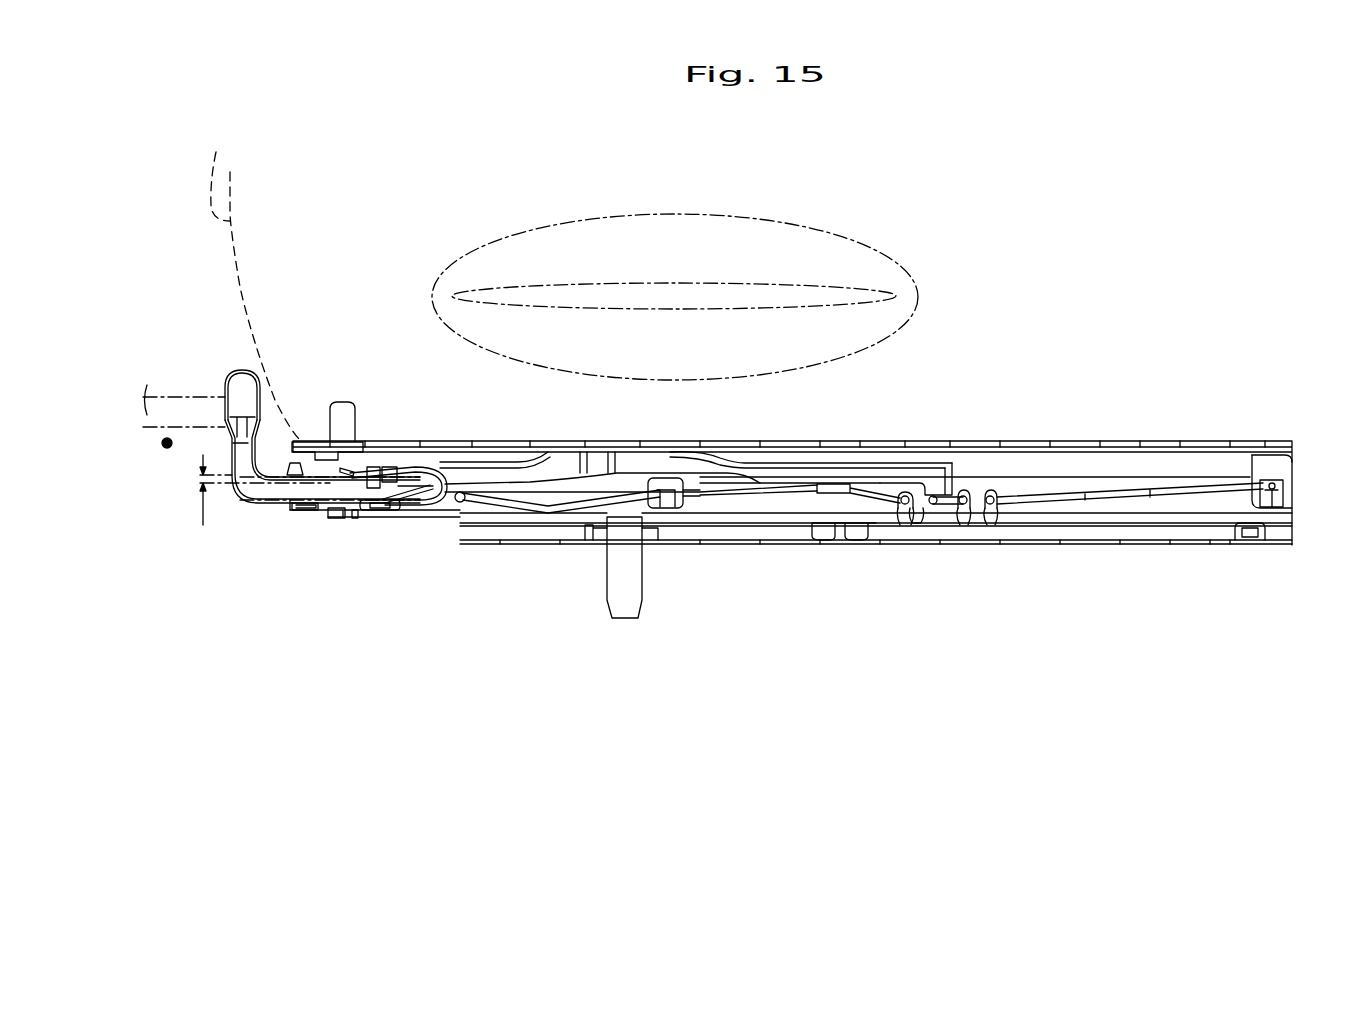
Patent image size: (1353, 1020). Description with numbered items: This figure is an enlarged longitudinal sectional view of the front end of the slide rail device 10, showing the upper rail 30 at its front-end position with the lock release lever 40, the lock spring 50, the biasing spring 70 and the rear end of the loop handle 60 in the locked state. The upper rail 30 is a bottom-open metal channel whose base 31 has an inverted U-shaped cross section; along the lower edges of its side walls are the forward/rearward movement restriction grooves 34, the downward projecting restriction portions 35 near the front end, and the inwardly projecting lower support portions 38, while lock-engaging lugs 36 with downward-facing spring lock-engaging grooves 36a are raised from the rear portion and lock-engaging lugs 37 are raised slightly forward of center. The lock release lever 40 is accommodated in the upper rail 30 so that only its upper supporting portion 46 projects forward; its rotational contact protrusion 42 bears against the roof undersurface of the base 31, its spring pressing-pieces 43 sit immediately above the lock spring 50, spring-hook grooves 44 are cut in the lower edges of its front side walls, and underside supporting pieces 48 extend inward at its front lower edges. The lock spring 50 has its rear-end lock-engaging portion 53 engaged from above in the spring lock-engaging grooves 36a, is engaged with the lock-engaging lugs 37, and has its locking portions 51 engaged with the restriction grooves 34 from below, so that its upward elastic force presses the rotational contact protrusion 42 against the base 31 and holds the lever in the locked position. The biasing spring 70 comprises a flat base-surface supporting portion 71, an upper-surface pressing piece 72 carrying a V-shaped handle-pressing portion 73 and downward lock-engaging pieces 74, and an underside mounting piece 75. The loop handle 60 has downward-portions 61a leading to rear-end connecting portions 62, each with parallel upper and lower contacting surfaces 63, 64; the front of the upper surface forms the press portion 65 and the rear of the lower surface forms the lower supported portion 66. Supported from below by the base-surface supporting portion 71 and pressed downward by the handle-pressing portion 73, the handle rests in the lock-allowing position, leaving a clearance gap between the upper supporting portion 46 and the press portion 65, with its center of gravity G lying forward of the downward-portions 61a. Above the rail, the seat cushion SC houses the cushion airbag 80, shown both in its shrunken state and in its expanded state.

The slide rail device 10 is at (1003, 282).
The upper rail 30 is at (945, 460).
The base 31 is at (850, 445).
The forward/rearward movement restriction grooves 34 is at (990, 506).
The downward projecting restriction portions 35 is at (920, 523).
The lock-engaging lugs 36 is at (1272, 509).
The spring lock-engaging grooves 36a is at (1274, 483).
The lock-engaging lugs 37 is at (668, 509).
The lower support portions 38 is at (372, 511).
The lock release lever 40 is at (772, 468).
The rotational contact protrusion 42 is at (555, 448).
The spring pressing-pieces 43 is at (940, 485).
The spring-hook grooves 44 is at (462, 503).
The upper supporting portion 46 is at (288, 463).
The underside supporting pieces 48 is at (300, 510).
The lock spring 50 is at (572, 505).
The locking portions 51 is at (965, 495).
The rear-end lock-engaging portion 53 is at (1262, 484).
The loop handle 60 is at (262, 505).
The downward-portions 61a is at (235, 446).
The rear-end connecting portions 62 is at (330, 507).
The upper contacting surface 63 is at (345, 468).
The lower contacting surface 64 is at (350, 519).
The press portion 65 is at (300, 460).
The lower supported portion 66 is at (395, 511).
The biasing spring 70 is at (465, 468).
The base-surface supporting portion 71 is at (410, 506).
The upper-surface pressing piece 72 is at (420, 468).
The handle-pressing portion 73 is at (380, 468).
The downward lock-engaging pieces 74 is at (343, 511).
The underside mounting piece 75 is at (378, 511).
The cushion airbag 80 is at (600, 285).
The seat cushion SC is at (250, 284).
The center of gravity G is at (162, 445).